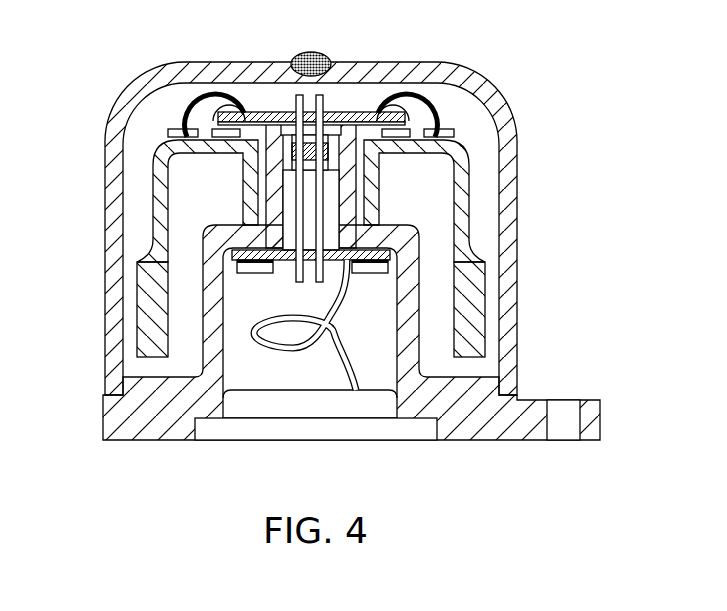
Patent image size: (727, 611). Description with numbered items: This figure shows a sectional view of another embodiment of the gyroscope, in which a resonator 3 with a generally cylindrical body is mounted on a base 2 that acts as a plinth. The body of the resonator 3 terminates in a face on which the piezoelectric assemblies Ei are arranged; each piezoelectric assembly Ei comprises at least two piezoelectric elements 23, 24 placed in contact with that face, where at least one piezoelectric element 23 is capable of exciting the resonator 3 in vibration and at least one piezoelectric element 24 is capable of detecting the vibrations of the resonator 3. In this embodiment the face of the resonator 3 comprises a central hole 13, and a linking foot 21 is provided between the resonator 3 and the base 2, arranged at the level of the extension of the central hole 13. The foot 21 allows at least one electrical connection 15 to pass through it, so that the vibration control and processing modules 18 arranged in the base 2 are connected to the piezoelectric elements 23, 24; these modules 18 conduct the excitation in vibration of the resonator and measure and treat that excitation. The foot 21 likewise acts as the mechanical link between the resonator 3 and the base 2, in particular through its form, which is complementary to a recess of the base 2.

The base 2 is at (522, 403).
The resonator 3 is at (477, 293).
The central hole 13 is at (263, 136).
The electrical connection 15 is at (293, 203).
The vibration control and processing modules 18 is at (240, 273).
The linking foot 21 is at (378, 185).
The piezoelectric element 23 is at (446, 125).
The piezoelectric element 24 is at (405, 122).
The piezoelectric assembly Ei is at (424, 110).